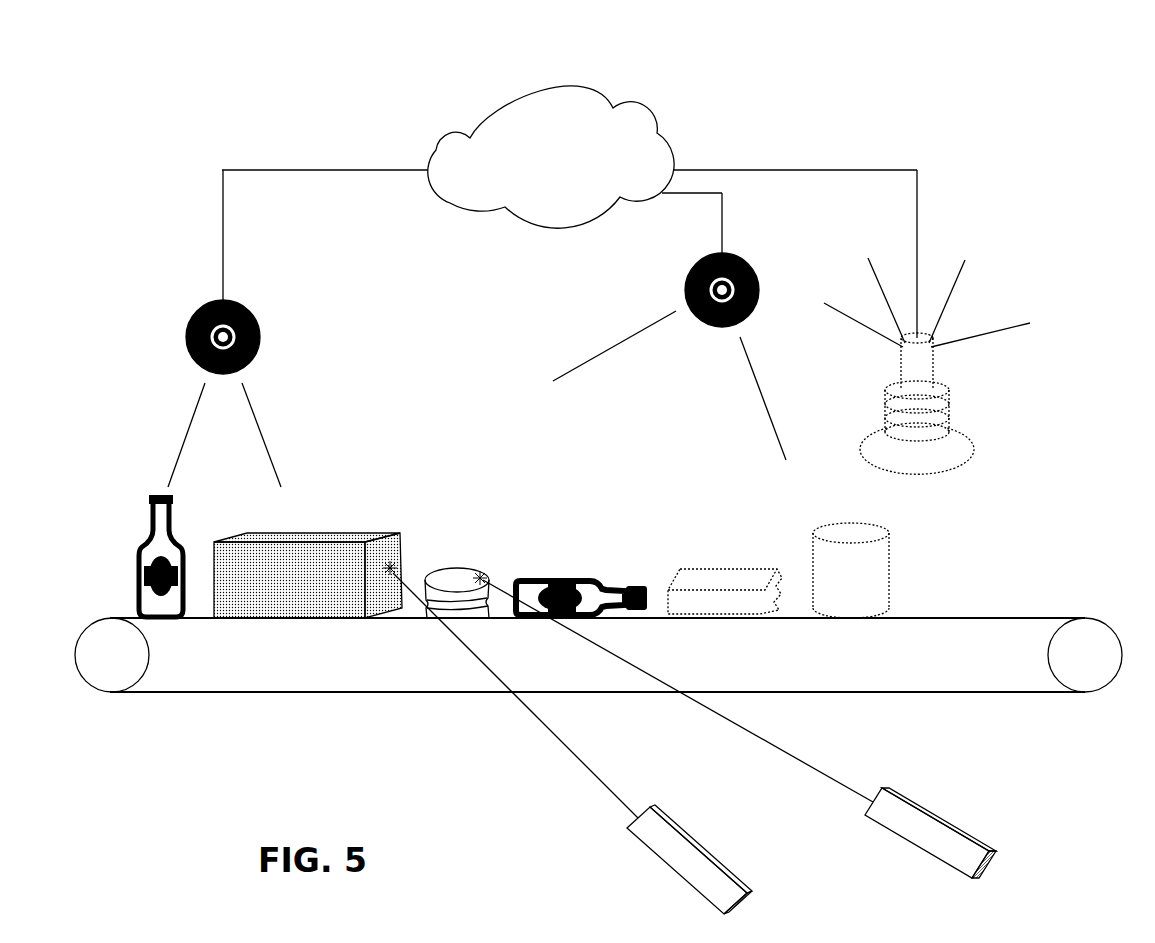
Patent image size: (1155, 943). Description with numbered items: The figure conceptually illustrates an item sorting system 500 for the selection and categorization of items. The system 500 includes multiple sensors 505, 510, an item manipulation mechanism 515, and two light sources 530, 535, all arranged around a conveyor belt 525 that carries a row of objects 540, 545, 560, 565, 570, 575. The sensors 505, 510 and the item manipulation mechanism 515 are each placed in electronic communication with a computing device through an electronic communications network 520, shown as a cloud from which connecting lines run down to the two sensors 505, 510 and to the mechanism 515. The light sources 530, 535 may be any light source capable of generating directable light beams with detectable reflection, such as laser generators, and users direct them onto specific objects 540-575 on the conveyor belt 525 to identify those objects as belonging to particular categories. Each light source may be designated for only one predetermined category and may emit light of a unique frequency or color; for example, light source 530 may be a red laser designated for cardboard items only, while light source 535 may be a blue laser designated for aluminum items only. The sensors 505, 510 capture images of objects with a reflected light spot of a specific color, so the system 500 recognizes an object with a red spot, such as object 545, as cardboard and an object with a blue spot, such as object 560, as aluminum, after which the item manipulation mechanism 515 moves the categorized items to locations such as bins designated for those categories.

The item sorting system 500 is at (100, 50).
The sensor 505 is at (198, 311).
The sensor 510 is at (698, 262).
The item manipulation mechanism 515 is at (884, 428).
The electronic communications network 520 is at (505, 110).
The conveyor belt 525 is at (254, 697).
The light source 530 is at (713, 860).
The light source 535 is at (938, 815).
The object 540 is at (142, 538).
The object 545 is at (318, 535).
The object 560 is at (450, 570).
The object 565 is at (535, 578).
The object 570 is at (683, 568).
The object 575 is at (889, 532).